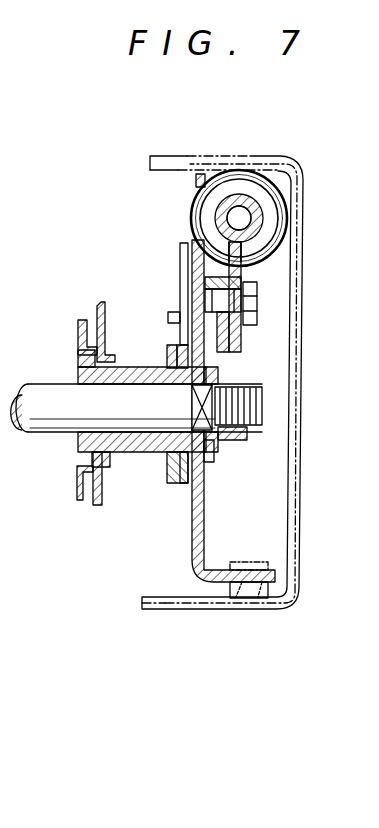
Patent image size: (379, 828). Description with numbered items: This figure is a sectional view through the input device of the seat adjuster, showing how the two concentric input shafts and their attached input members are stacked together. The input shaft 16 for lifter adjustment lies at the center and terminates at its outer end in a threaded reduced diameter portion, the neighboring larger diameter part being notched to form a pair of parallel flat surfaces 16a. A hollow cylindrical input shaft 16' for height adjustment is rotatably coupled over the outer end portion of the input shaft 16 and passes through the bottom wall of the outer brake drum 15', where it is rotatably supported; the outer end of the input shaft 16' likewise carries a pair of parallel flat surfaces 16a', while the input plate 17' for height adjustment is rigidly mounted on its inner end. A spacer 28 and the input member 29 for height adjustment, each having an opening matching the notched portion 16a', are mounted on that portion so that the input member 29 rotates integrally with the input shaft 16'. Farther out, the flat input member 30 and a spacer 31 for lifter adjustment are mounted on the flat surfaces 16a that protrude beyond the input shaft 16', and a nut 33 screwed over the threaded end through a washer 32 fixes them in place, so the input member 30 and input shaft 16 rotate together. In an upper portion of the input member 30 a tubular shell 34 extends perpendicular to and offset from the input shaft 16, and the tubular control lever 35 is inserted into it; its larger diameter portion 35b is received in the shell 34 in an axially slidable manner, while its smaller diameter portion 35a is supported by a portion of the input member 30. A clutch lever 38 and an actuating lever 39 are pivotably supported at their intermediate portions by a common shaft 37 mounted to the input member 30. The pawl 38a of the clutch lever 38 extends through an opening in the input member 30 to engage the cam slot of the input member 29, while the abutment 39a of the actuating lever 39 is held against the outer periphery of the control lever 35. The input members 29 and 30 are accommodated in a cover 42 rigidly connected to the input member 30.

The brake drum 15' is at (91, 430).
The input shaft 16 is at (136, 429).
The hollow cylindrical input shaft 16' is at (142, 416).
The parallel flat surfaces 16a is at (230, 427).
The parallel flat surfaces 16a' is at (144, 349).
The input plate 17' is at (61, 415).
The spacer 28 is at (176, 471).
The input member 29 is at (186, 486).
The flat input member 30 is at (192, 568).
The spacer 31 is at (208, 463).
The washer 32 is at (226, 445).
The nut 33 is at (249, 437).
The tubular shell 34 is at (229, 178).
The tubular control lever 35 is at (270, 215).
The smaller diameter portion 35a is at (222, 224).
The larger diameter portion 35b is at (199, 202).
The common shaft 37 is at (258, 305).
The clutch lever 38 is at (244, 331).
The pawl 38a is at (174, 312).
The actuating lever 39 is at (252, 278).
The abutment 39a is at (256, 236).
The cover 42 is at (300, 568).